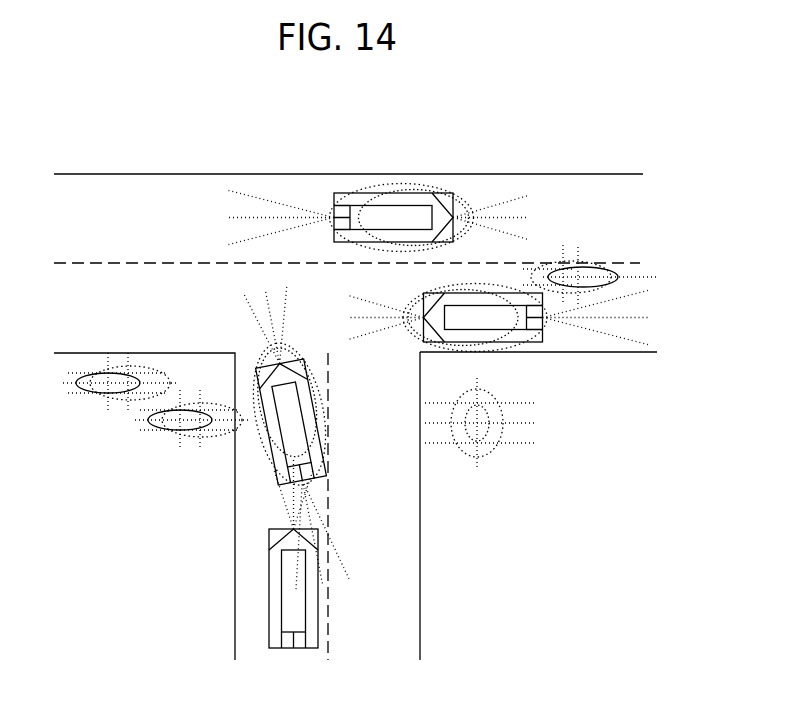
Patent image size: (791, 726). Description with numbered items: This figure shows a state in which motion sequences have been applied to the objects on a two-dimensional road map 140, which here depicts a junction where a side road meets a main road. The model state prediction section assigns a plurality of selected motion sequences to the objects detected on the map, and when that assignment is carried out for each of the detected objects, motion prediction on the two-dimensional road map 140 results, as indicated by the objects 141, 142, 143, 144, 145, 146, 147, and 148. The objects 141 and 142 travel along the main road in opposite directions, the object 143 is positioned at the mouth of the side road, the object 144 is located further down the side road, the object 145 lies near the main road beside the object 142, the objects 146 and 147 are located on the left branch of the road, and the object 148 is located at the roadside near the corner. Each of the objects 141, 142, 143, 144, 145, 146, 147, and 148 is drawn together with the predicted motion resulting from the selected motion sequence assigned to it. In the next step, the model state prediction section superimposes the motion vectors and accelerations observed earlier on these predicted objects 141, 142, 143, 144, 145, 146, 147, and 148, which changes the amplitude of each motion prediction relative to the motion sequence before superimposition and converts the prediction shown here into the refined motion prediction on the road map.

The road / intersection 140 is at (175, 174).
The object 141 is at (432, 193).
The object 142 is at (518, 352).
The object 143 is at (300, 346).
The object 144 is at (319, 628).
The object 145 is at (600, 266).
The object 146 is at (82, 393).
The object 147 is at (163, 432).
The object 148 is at (487, 460).